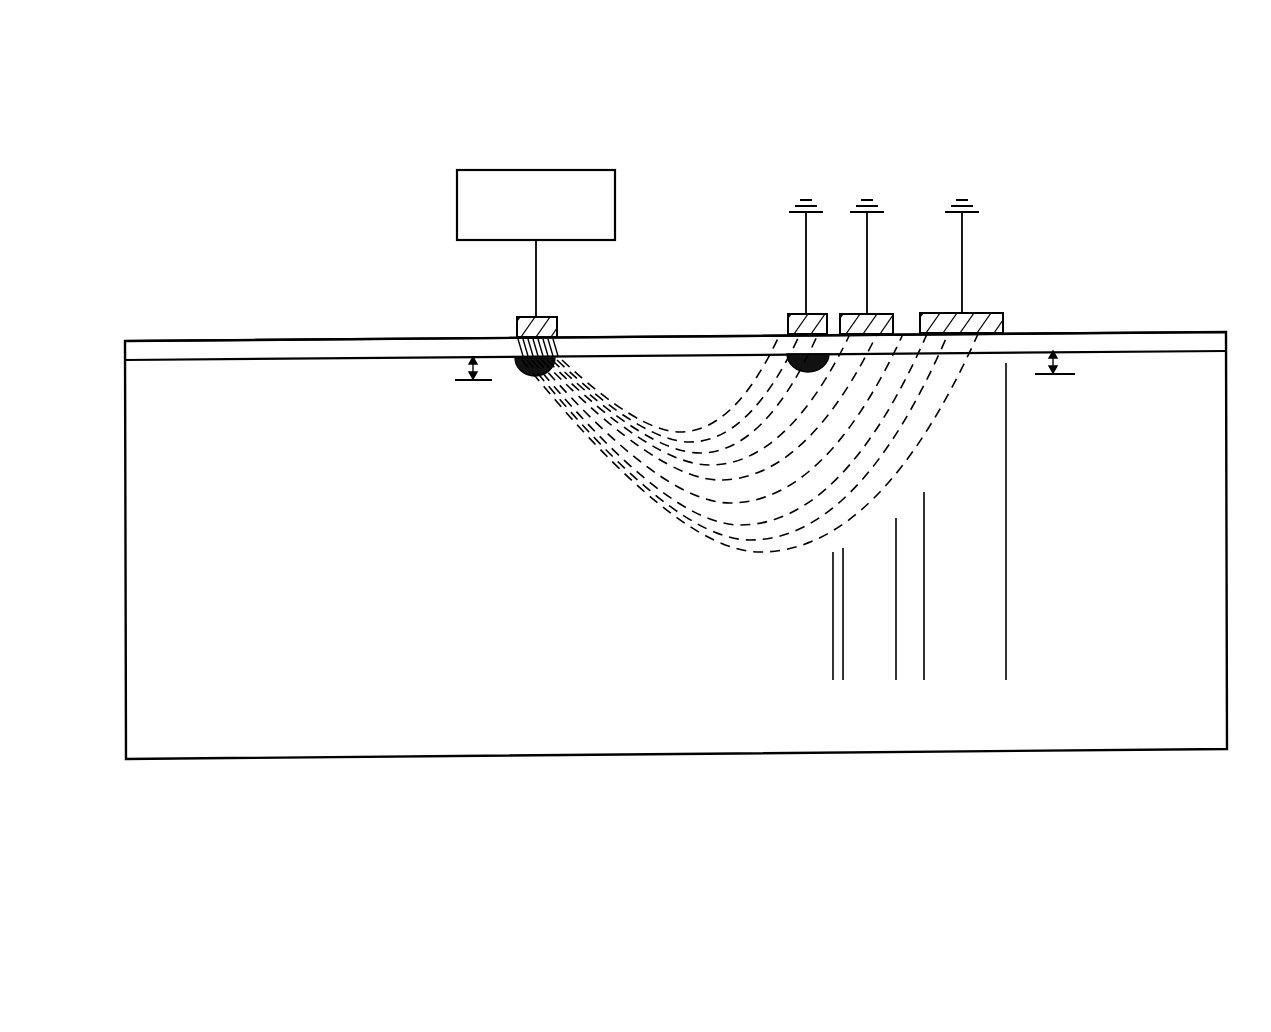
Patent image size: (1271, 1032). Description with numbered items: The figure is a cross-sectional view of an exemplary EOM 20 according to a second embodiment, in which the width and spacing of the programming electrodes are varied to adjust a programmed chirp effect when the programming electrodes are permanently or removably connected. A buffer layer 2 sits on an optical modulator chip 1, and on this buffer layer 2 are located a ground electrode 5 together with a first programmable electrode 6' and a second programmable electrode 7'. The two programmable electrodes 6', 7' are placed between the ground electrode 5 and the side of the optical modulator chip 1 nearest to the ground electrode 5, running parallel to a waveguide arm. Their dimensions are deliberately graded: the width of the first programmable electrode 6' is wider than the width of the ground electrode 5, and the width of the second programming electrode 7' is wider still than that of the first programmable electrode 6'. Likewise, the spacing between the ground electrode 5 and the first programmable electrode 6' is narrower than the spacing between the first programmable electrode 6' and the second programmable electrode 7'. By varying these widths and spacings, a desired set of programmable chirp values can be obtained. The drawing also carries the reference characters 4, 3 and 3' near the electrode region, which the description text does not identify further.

The EOM 20 is at (297, 224).
The optical modulator chip 1 is at (155, 488).
The buffer layer 2 is at (147, 353).
The input contact region 3 is at (578, 381).
The output contact region 3' is at (766, 379).
The input electrode pad 4 is at (523, 317).
The ground electrode 5 is at (800, 318).
The first programmable electrode 6' is at (859, 250).
The second programmable electrode 7' is at (955, 249).